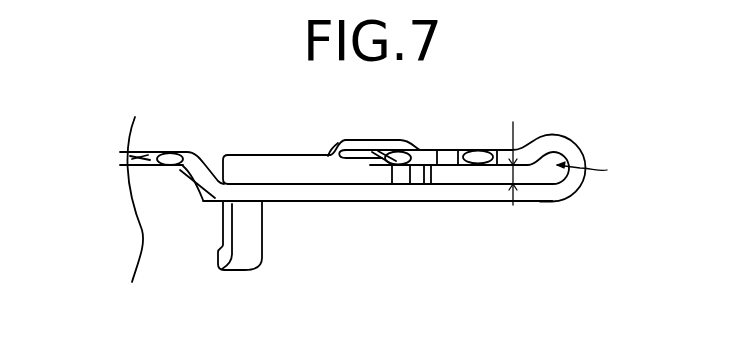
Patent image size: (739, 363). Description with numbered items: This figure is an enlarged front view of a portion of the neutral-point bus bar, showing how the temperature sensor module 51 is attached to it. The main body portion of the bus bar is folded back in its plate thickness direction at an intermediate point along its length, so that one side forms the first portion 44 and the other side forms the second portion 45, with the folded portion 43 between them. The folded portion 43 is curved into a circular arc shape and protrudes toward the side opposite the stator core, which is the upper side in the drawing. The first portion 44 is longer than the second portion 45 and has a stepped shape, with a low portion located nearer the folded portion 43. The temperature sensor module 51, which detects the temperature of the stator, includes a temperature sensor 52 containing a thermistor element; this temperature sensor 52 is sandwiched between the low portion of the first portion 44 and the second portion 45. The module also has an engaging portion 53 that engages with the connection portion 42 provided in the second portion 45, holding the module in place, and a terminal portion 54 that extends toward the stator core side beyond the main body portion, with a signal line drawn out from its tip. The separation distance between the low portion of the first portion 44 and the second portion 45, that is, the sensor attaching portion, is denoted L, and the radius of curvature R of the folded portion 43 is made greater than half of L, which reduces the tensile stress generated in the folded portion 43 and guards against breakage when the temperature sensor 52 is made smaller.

The connection portion 42 is at (417, 152).
The folded portion 43 is at (565, 139).
The first portion 44 is at (538, 204).
The second portion 45 is at (453, 150).
The temperature sensor module 51 is at (243, 155).
The temperature sensor 52 is at (392, 172).
The engaging portion 53 is at (405, 138).
The terminal portion 54 is at (265, 248).
The separation distance L is at (519, 156).
The radius of curvature R is at (590, 172).